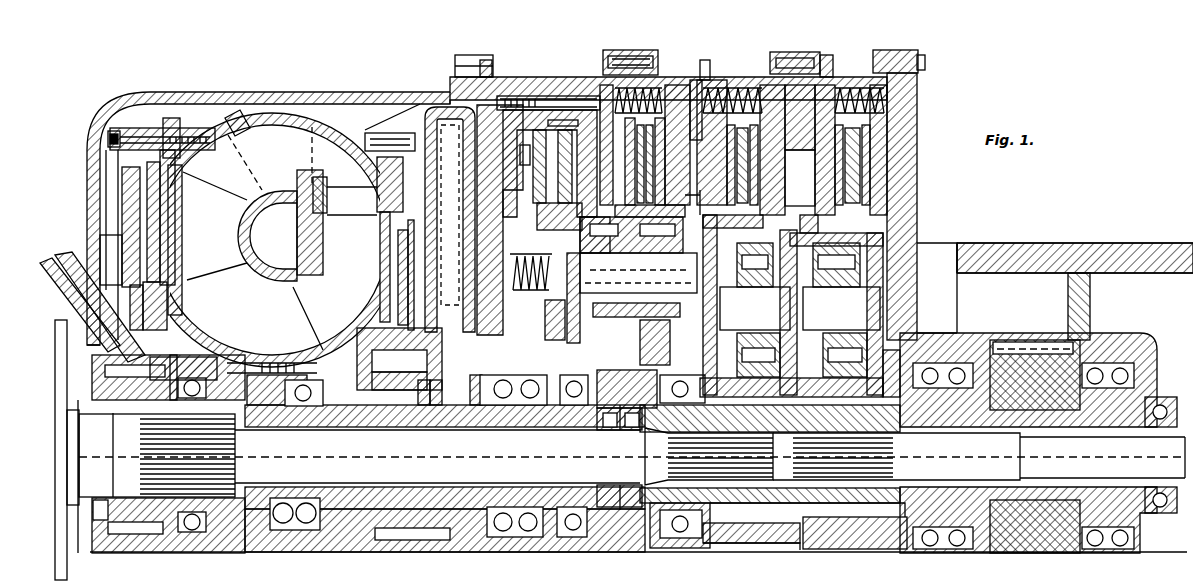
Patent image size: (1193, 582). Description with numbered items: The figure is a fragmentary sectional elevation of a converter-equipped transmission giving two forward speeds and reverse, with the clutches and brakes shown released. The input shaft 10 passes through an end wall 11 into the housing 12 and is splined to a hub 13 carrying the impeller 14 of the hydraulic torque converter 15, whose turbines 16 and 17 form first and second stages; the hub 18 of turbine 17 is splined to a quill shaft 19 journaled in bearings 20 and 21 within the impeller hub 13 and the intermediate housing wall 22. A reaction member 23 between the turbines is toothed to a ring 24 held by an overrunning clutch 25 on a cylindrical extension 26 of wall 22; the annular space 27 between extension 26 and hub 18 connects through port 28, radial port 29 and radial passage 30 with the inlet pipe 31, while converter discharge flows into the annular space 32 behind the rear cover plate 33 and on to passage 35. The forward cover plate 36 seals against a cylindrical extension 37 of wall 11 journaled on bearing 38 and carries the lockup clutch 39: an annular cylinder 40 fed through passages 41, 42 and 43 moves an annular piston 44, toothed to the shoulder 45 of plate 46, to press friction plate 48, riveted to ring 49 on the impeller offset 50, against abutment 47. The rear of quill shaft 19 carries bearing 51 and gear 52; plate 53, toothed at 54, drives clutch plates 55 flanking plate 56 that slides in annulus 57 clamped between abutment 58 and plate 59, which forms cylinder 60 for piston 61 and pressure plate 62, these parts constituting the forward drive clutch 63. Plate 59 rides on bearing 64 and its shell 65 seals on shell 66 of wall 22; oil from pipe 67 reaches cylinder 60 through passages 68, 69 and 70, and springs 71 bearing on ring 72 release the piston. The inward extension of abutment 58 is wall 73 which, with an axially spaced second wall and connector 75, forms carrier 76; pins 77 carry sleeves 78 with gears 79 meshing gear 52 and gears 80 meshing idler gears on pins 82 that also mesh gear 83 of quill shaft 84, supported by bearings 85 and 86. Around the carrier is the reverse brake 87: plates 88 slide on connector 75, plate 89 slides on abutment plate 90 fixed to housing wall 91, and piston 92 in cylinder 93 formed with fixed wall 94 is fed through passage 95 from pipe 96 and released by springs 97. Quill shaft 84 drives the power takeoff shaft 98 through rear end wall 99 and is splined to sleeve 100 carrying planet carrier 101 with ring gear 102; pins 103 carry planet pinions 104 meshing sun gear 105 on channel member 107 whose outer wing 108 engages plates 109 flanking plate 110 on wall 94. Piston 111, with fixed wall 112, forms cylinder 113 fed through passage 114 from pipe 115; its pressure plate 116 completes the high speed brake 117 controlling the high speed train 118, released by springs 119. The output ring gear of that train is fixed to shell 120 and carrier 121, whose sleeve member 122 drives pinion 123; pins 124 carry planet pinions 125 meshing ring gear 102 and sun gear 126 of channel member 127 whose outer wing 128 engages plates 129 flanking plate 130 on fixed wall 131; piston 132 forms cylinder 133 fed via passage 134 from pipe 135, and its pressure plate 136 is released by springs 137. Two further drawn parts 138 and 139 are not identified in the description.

The input shaft 10 is at (60, 470).
The end wall 11 is at (90, 200).
The housing 12 is at (190, 82).
The hub 13 is at (674, 203).
The impeller 14 is at (220, 244).
The hydraulic torque converter 15 is at (364, 130).
The turbine 16 is at (295, 152).
The turbine 17 is at (357, 277).
The hub 18 is at (368, 471).
The quill shaft 19 is at (368, 427).
The bearing 20 is at (280, 420).
The bearing 21 is at (490, 398).
The intermediate housing wall 22 is at (428, 103).
The reaction member 23 is at (362, 214).
The ring 24 is at (399, 359).
The overrunning clutch 25 is at (399, 361).
The cylindrical extension 26 is at (399, 381).
The annular space 27 is at (423, 388).
The port 28 is at (316, 389).
The radial port 29 is at (435, 392).
The radial passage 30 is at (467, 144).
The pipe 31 is at (488, 60).
The annular space 32 is at (390, 229).
The cover plate 33 is at (418, 275).
The passage 35 is at (401, 440).
The cover plate 36 is at (118, 176).
The cylindrical extension 37 is at (133, 392).
The bearing 38 is at (205, 362).
The lockup clutch 39 is at (105, 231).
The annular cylinder 40 is at (117, 193).
The passage 41 is at (110, 290).
The passage 42 is at (100, 378).
The passage 43 is at (112, 300).
The annular piston 44 is at (145, 242).
The annular shoulder 45 is at (127, 187).
The annular plate 46 is at (172, 130).
The abutment 47 is at (165, 200).
The friction plate 48 is at (152, 262).
The ring 49 is at (170, 300).
The annular offset 50 is at (168, 333).
The bearing 51 is at (607, 420).
The gear 52 is at (636, 320).
The annular plate 53 is at (556, 224).
The toothed periphery 54 is at (536, 229).
The clutch plates 55 is at (536, 214).
The clutch plate 56 is at (547, 128).
The annulus 57 is at (537, 108).
The abutment 58 is at (565, 128).
The annular plate 59 is at (503, 98).
The annular cylinder 60 is at (513, 186).
The annular piston 61 is at (514, 194).
The pressure plate 62 is at (522, 151).
The forward drive clutch 63 is at (553, 122).
The bearing 64 is at (570, 398).
The cylindrical shell 65 is at (546, 324).
The shell 66 is at (522, 398).
The pipe 67 is at (503, 88).
The radial passage 68 is at (450, 192).
The passage 69 is at (490, 407).
The passage 70 is at (480, 300).
The springs 71 is at (531, 264).
The ring 72 is at (535, 248).
The wall 73 is at (588, 290).
The annular connector 75 is at (650, 208).
The annular carrier 76 is at (733, 305).
The pins 77 is at (638, 273).
The sleeve 78 is at (640, 240).
The gear 79 is at (615, 240).
The gear 80 is at (672, 240).
The pin 82 is at (640, 280).
The gear 83 is at (646, 342).
The quill shaft 84 is at (668, 420).
The bearing 85 is at (672, 400).
The bearing 86 is at (635, 425).
The reverse brake 87 is at (653, 82).
The plates 88 is at (670, 130).
The plate 89 is at (672, 105).
The abutment plate 90 is at (631, 145).
The housing wall 91 is at (678, 118).
The annular piston 92 is at (692, 152).
The annular cylinder 93 is at (700, 72).
The fixed wall 94 is at (720, 165).
The passage 95 is at (752, 67).
The pipe 96 is at (733, 95).
The springs 97 is at (637, 58).
The power takeoff shaft 98 is at (955, 454).
The rear end wall 99 is at (918, 209).
The sleeve 100 is at (770, 405).
The planet carrier 101 is at (793, 326).
The ring gear 102 is at (917, 235).
The pins 103 is at (748, 314).
The planet pinion 104 is at (755, 308).
The sun gear 105 is at (758, 312).
The channel member 107 is at (683, 282).
The outer wing 108 is at (755, 255).
The annular plates 109 is at (842, 165).
The annular plate 110 is at (833, 55).
The annular piston 111 is at (765, 140).
The fixed annular wall 112 is at (772, 110).
The annular cylinder 113 is at (778, 98).
The passage 114 is at (766, 130).
The pipe 115 is at (797, 65).
The pressure plate 116 is at (800, 178).
The high speed brake 117 is at (775, 68).
The high speed train 118 is at (792, 232).
The springs 119 is at (741, 82).
The annular shell 120 is at (797, 250).
The planet pinion carrier 121 is at (912, 277).
The sleeve member 122 is at (884, 373).
The pinion 123 is at (1038, 443).
The pins 124 is at (866, 323).
The planet pinion 125 is at (841, 286).
The sun gear 126 is at (845, 357).
The channel member 127 is at (930, 303).
The outer wing 128 is at (920, 223).
The annular plates 129 is at (917, 177).
The plate 130 is at (917, 127).
The fixed wall 131 is at (917, 113).
The piston 132 is at (822, 143).
The annular cylinder 133 is at (822, 128).
The passage 134 is at (836, 86).
The pipe 135 is at (833, 60).
The pressure plate 136 is at (842, 185).
The springs 137 is at (917, 96).
The passage 138 is at (903, 319).
The passage 139 is at (910, 150).